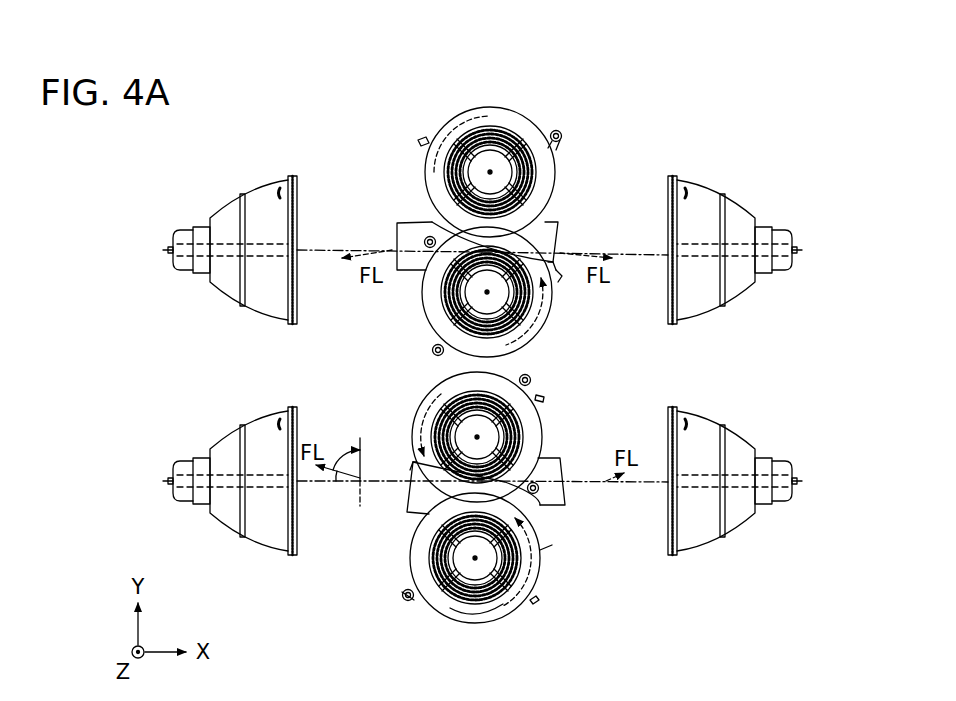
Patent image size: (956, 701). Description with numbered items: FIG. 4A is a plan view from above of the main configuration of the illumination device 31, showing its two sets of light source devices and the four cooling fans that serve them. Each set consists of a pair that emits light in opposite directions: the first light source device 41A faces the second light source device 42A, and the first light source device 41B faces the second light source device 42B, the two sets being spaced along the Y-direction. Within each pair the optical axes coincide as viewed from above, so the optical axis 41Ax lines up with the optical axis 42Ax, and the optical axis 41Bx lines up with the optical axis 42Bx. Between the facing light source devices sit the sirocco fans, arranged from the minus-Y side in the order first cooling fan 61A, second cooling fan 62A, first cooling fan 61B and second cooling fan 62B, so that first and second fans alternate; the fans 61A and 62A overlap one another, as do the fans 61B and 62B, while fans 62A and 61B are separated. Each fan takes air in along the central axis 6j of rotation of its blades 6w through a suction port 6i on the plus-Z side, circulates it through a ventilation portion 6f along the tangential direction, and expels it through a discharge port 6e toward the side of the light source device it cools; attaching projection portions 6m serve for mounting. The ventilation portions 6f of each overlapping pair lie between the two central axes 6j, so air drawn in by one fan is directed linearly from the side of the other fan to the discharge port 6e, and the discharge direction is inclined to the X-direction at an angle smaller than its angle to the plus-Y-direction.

The illumination device 31 is at (559, 339).
The first cooling fan 61A is at (525, 614).
The first cooling fan 61B is at (530, 338).
The second cooling fan 62A is at (540, 405).
The second cooling fan 62B is at (556, 166).
The discharge port 6e is at (397, 236).
The ventilation portion 6f is at (556, 268).
The suction port 6i is at (528, 185).
The central axis of rotation 6j is at (490, 172).
The attaching projection portions 6m is at (548, 548).
The blades 6w is at (503, 604).
The first light source device 41A is at (182, 426).
The first light source device 41B is at (182, 192).
The second light source device 42A is at (762, 426).
The second light source device 42B is at (762, 192).
The optical axis 41Ax is at (362, 490).
The optical axis 41Bx is at (336, 252).
The optical axis 42Ax is at (640, 484).
The optical axis 42Bx is at (634, 256).